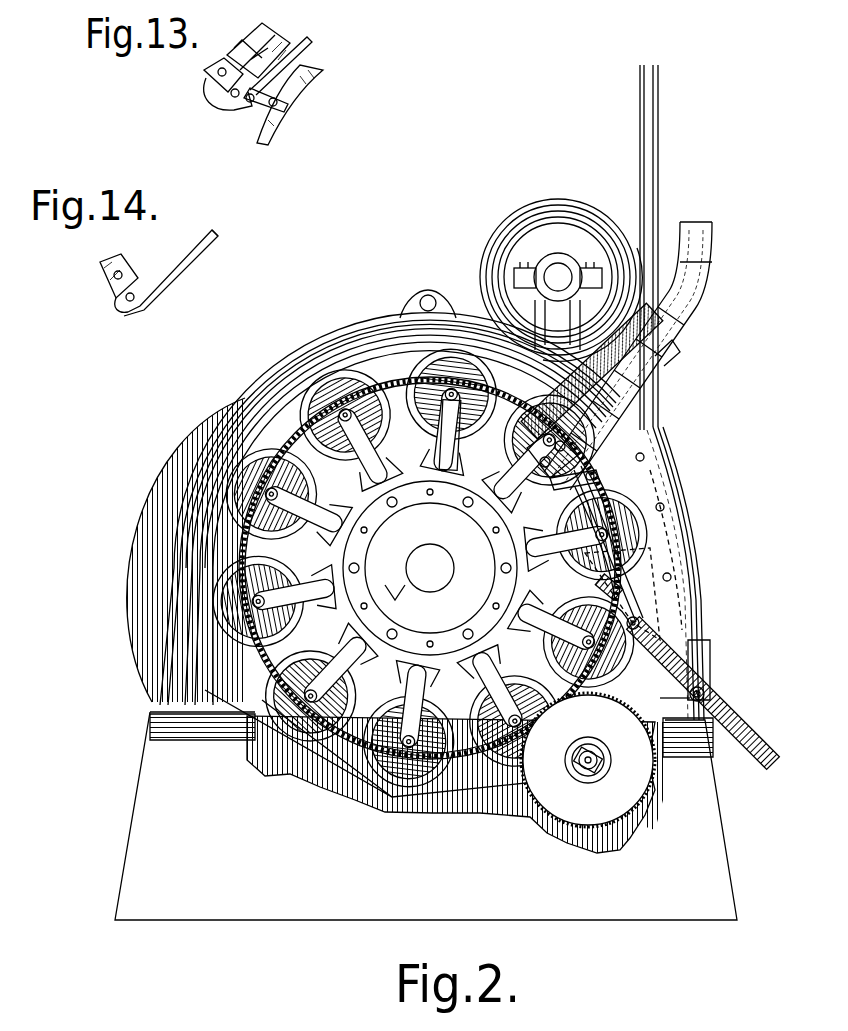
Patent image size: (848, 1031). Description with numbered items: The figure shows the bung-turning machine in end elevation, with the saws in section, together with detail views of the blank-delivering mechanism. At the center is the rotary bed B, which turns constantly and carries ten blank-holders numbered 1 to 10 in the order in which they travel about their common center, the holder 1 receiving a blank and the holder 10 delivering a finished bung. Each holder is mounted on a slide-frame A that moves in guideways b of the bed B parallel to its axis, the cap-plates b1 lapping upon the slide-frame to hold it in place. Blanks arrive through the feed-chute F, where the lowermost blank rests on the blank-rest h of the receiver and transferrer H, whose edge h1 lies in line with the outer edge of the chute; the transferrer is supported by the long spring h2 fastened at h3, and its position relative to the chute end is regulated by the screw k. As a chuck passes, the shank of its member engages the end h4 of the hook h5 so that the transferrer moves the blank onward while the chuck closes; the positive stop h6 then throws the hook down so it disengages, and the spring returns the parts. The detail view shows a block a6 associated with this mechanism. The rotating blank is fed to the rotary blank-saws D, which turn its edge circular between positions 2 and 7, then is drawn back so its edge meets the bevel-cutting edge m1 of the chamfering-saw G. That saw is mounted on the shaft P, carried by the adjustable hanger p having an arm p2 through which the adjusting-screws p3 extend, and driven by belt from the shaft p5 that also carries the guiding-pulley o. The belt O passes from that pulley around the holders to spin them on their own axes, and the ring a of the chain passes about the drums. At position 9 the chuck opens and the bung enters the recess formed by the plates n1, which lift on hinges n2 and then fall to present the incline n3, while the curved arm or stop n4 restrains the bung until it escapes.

In FIG. 13, the feed-chute F is at (256, 36).
In FIG. 2, the feed-chute F is at (645, 412).
In FIG. 13, the long spring h2 is at (310, 44).
In FIG. 2, the long spring h2 is at (668, 368).
In FIG. 13, the curved arm or stop n4 is at (280, 122).
In FIG. 2, the curved arm or stop n4 is at (676, 540).
In FIG. 13, the end of hook h4 is at (204, 76).
In FIG. 13, the hook h5 is at (224, 106).
In FIG. 13, the positive stop h6 is at (258, 110).
In FIG. 2, the positive stop h6 is at (600, 480).
In FIG. 14, the block a6 is at (100, 280).
In FIG. 14, the edge of receiver and transferrer h1 is at (120, 312).
In FIG. 2, the rotary bed B is at (430, 568).
In FIG. 2, the guideways b is at (430, 568).
In FIG. 2, the slide-frame A is at (385, 690).
In FIG. 2, the cap-plates b1 is at (395, 660).
In FIG. 2, the chain a is at (352, 782).
In FIG. 2, the blank-holder 1 is at (542, 412).
In FIG. 2, the blank-holder 2 is at (490, 384).
In FIG. 2, the blank-holder 3 is at (440, 378).
In FIG. 2, the blank-holder 4 is at (336, 434).
In FIG. 2, the blank-holder 5 is at (218, 610).
In FIG. 2, the blank-holder 6 is at (246, 760).
In FIG. 2, the blank-holder 7 is at (394, 798).
In FIG. 2, the blank-holder 8 is at (505, 800).
In FIG. 2, the blank-holder 9 is at (622, 670).
In FIG. 2, the blank-holder 10 is at (585, 545).
In FIG. 2, the rotary blank-saws D is at (316, 776).
In FIG. 2, the guiding-pulley o is at (561, 280).
In FIG. 2, the shaft p5 is at (552, 276).
In FIG. 2, the belt O is at (658, 178).
In FIG. 2, the fastening point of spring h3 is at (716, 245).
In FIG. 2, the screw k is at (664, 432).
In FIG. 2, the blank-rest h is at (608, 458).
In FIG. 2, the receiver and transferrer H is at (596, 500).
In FIG. 2, the hinges n2 is at (640, 620).
In FIG. 2, the incline n3 is at (650, 598).
In FIG. 2, the plates n1 is at (660, 565).
In FIG. 2, the adjusting-screws p3 is at (722, 736).
In FIG. 2, the adjustable hanger p is at (650, 692).
In FIG. 2, the arm p2 is at (690, 664).
In FIG. 2, the bevel-cutting edge m1 is at (660, 770).
In FIG. 2, the chamfering-saw G is at (588, 760).
In FIG. 2, the shaft P is at (582, 770).